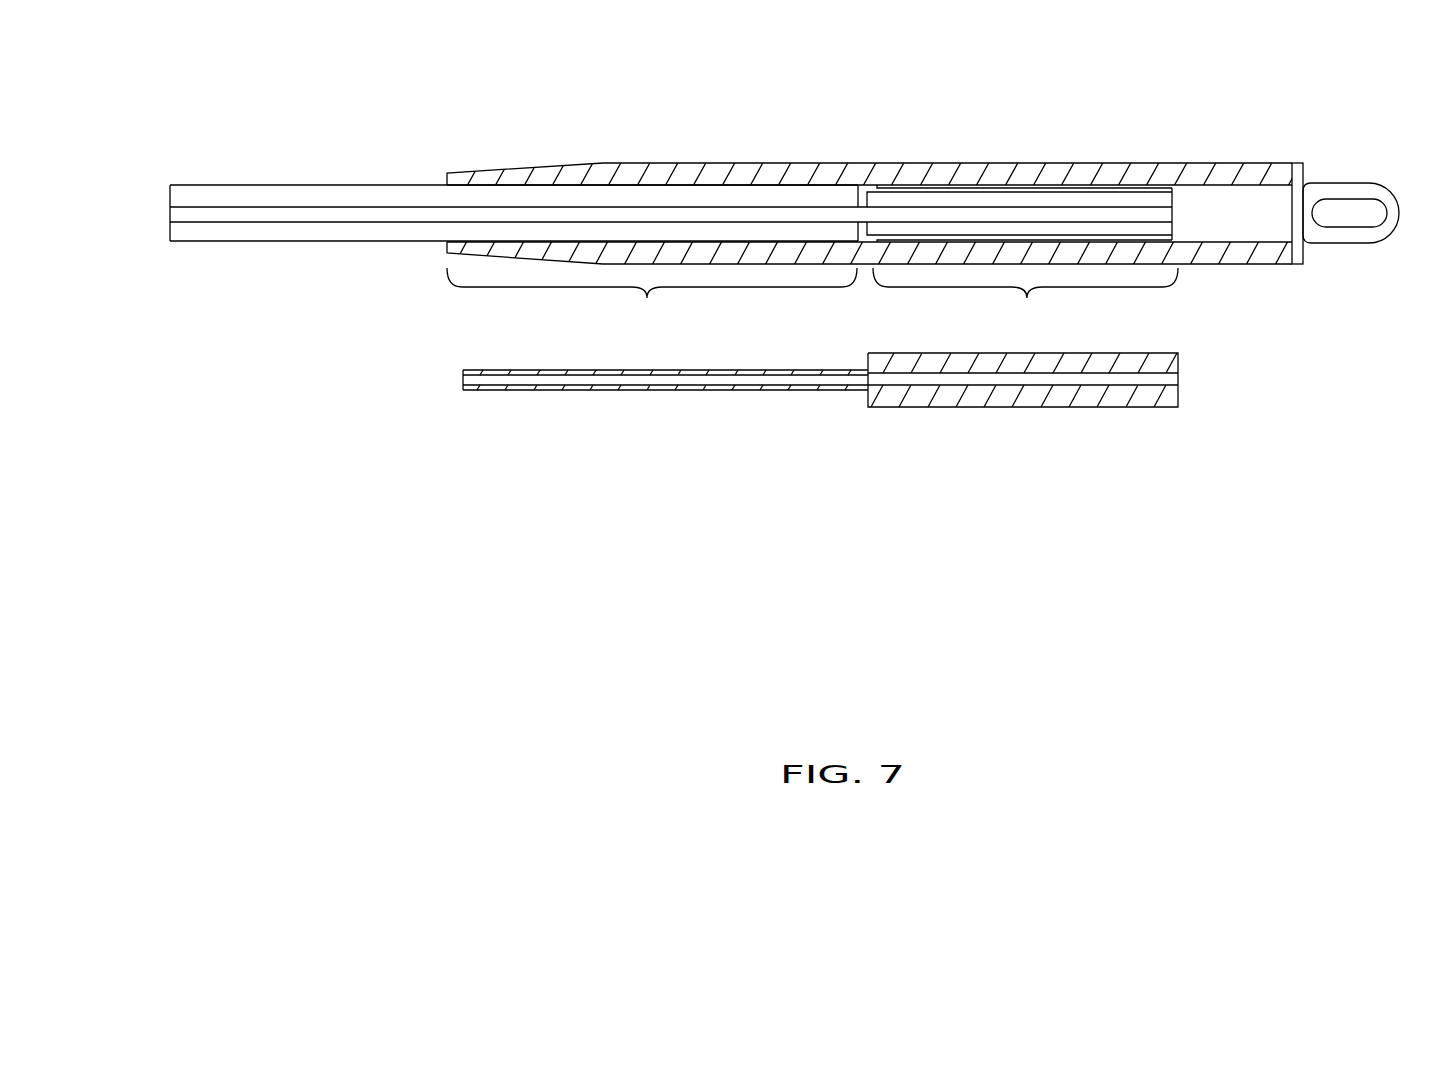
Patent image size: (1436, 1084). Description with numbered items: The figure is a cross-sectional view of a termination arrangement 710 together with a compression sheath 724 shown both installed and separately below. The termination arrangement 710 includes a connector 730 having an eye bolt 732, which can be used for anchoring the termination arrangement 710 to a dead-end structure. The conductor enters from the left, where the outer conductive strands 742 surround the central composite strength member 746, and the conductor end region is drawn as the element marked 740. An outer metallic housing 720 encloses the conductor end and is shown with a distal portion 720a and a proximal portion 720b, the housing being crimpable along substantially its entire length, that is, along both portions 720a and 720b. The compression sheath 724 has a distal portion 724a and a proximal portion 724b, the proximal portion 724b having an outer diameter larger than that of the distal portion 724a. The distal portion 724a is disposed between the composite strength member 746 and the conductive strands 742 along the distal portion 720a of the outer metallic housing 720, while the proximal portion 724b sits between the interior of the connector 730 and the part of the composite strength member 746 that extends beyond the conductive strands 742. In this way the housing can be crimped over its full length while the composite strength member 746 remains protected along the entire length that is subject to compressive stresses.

The termination arrangement 710 is at (965, 158).
The outer metallic housing 720 is at (633, 176).
The distal portion of the outer metallic housing 720a is at (652, 297).
The proximal portion of the outer metallic housing 720b is at (1025, 297).
The compression sheath 724 is at (1112, 187).
The distal portion of the compression sheath 724a is at (607, 390).
The proximal portion of the compression sheath 724b is at (1042, 388).
The connector 730 is at (1304, 172).
The eye bolt 732 is at (1340, 242).
The shaft 740 is at (325, 185).
The conductive strands 742 is at (195, 230).
The composite strength member 746 is at (300, 212).